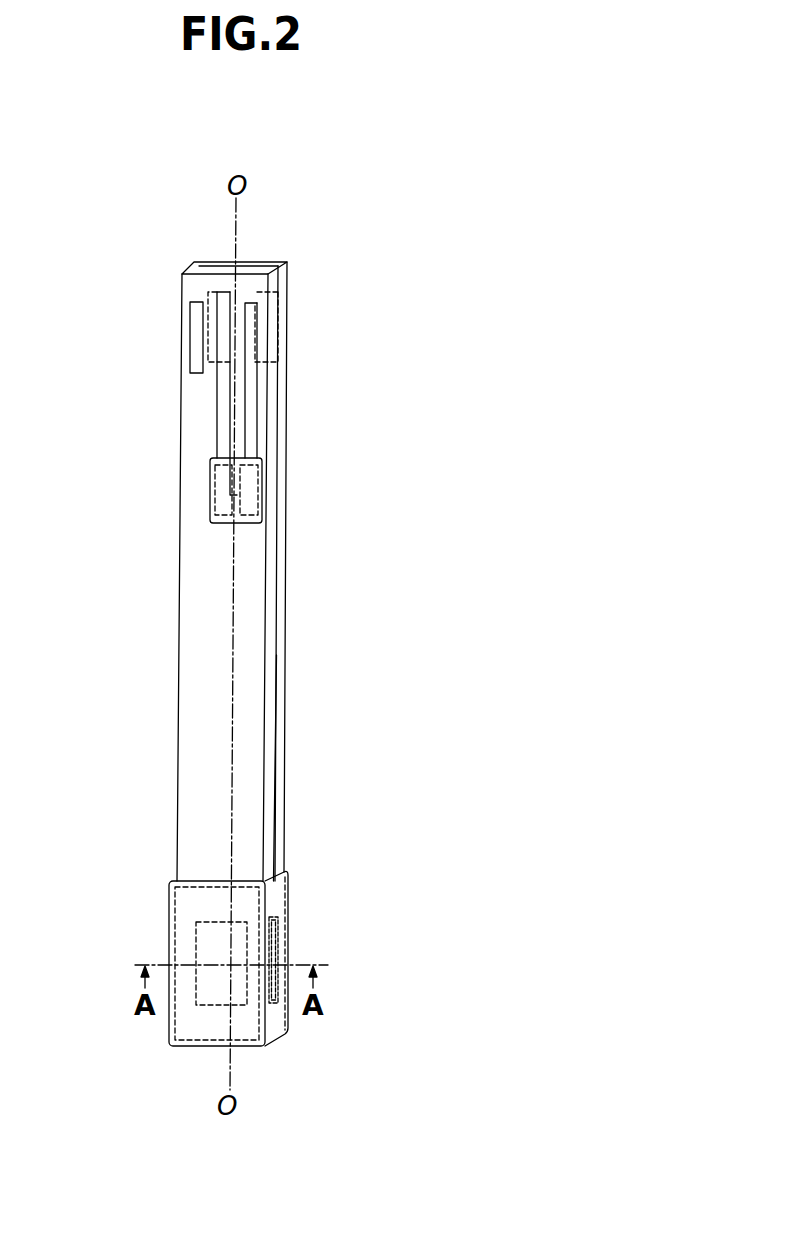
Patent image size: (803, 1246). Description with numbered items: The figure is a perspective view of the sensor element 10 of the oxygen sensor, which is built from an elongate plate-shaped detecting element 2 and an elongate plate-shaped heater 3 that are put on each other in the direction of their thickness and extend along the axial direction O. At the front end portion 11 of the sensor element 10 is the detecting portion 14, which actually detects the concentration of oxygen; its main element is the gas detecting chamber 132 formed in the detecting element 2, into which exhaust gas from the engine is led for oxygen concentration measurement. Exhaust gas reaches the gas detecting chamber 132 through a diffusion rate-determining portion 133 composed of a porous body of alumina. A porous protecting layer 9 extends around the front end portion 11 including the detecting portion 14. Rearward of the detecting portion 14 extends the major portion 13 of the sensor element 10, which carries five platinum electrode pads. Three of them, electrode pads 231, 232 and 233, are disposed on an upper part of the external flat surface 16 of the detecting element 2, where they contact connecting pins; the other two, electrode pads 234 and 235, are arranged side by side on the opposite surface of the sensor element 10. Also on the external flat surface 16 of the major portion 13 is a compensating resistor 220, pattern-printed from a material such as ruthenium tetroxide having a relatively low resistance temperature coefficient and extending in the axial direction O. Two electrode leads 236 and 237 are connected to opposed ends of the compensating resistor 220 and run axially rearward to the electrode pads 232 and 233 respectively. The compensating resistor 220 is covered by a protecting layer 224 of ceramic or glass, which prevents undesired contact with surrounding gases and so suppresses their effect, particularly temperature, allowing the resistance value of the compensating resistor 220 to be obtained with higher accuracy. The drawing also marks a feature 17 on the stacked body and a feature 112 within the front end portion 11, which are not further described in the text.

The sensor element 10 is at (354, 275).
The major portion 13 is at (150, 603).
The external flat surface 16 is at (218, 737).
The detecting element 2 is at (278, 706).
The heater 3 is at (288, 675).
The inner wall 17 is at (247, 731).
The electrode pad 231 is at (195, 312).
The electrode pad 232 is at (225, 323).
The electrode pad 233 is at (250, 340).
The electrode pad 234 is at (208, 292).
The electrode pad 235 is at (257, 292).
The electrode lead 236 is at (223, 405).
The electrode lead 237 is at (248, 432).
The compensating resistor 220 is at (238, 480).
The protecting layer 224 is at (222, 522).
The front end portion 11 is at (142, 930).
The porous protecting layer 9 is at (291, 888).
The detecting portion 14 is at (252, 1038).
The diffusion rate-determining portion 133 is at (278, 948).
The opening 112 is at (238, 993).
The gas detecting chamber 132 is at (312, 997).